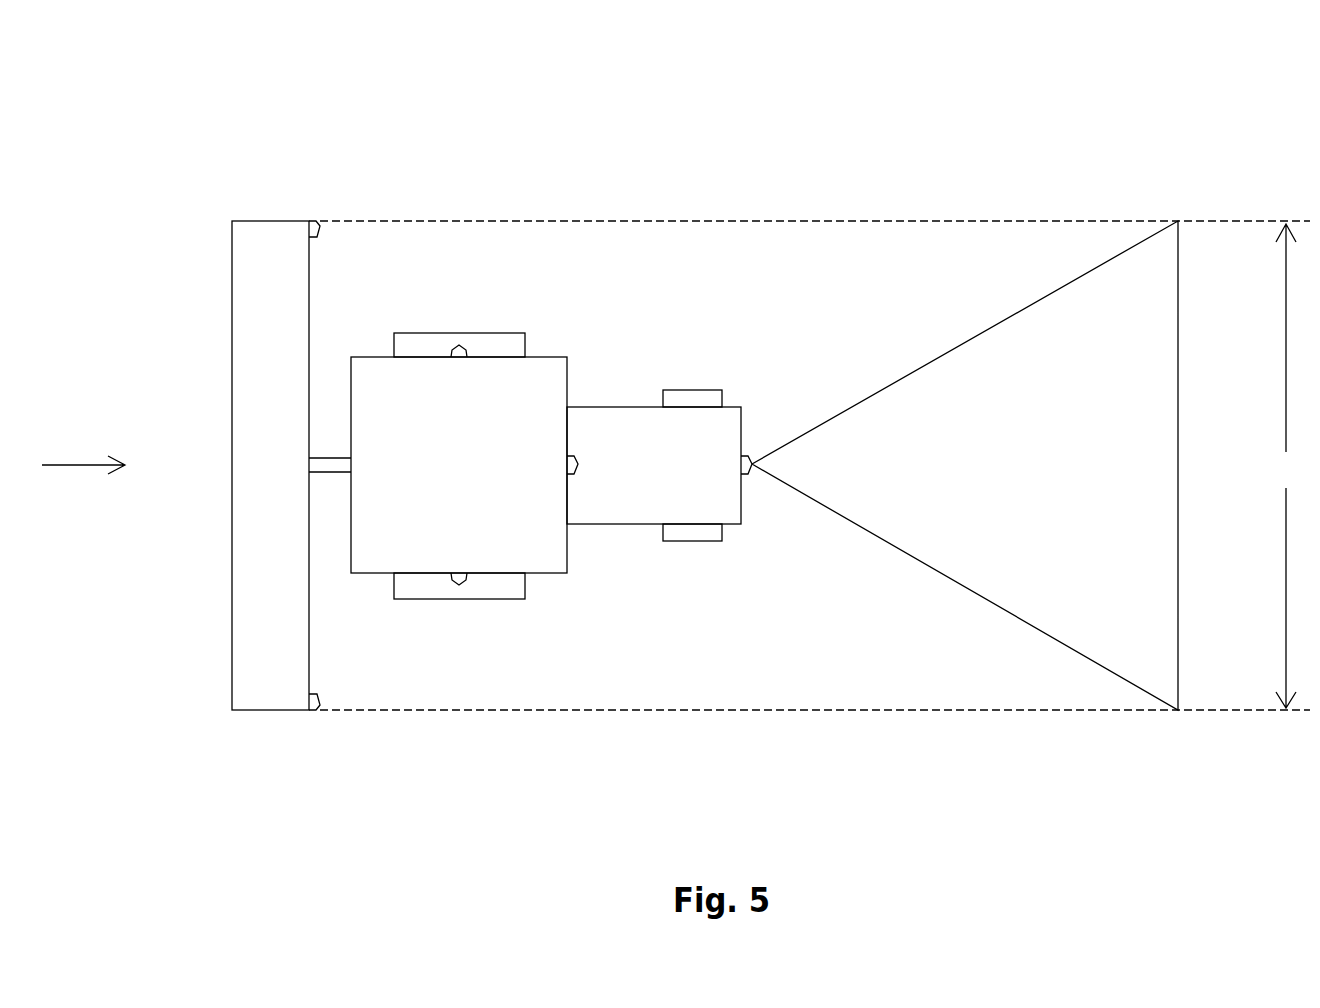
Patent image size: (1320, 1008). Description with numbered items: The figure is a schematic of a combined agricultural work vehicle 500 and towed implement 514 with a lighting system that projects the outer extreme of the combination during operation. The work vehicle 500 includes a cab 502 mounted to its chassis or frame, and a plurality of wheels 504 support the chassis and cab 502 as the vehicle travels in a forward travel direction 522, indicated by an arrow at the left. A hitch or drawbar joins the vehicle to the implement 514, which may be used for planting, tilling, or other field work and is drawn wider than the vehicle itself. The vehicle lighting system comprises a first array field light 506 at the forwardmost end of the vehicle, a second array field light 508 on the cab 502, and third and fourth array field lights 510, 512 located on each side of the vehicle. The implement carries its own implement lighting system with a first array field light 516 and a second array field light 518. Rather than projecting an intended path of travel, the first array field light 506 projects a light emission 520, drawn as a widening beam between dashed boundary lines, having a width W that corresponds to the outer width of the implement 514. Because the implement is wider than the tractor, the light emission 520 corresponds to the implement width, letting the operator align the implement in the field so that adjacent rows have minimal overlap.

The work vehicle 500 is at (449, 120).
The cab 502 is at (372, 415).
The wheels 504 is at (405, 333).
The first array field light 506 is at (752, 460).
The second array field light 508 is at (585, 480).
The third array field light 510 is at (462, 348).
The fourth array field light 512 is at (460, 585).
The implement 514 is at (250, 565).
The first array field light 516 is at (320, 221).
The second array field light 518 is at (320, 710).
The light emission 520 is at (952, 350).
The forward travel direction 522 is at (83, 465).
The width W is at (1285, 466).